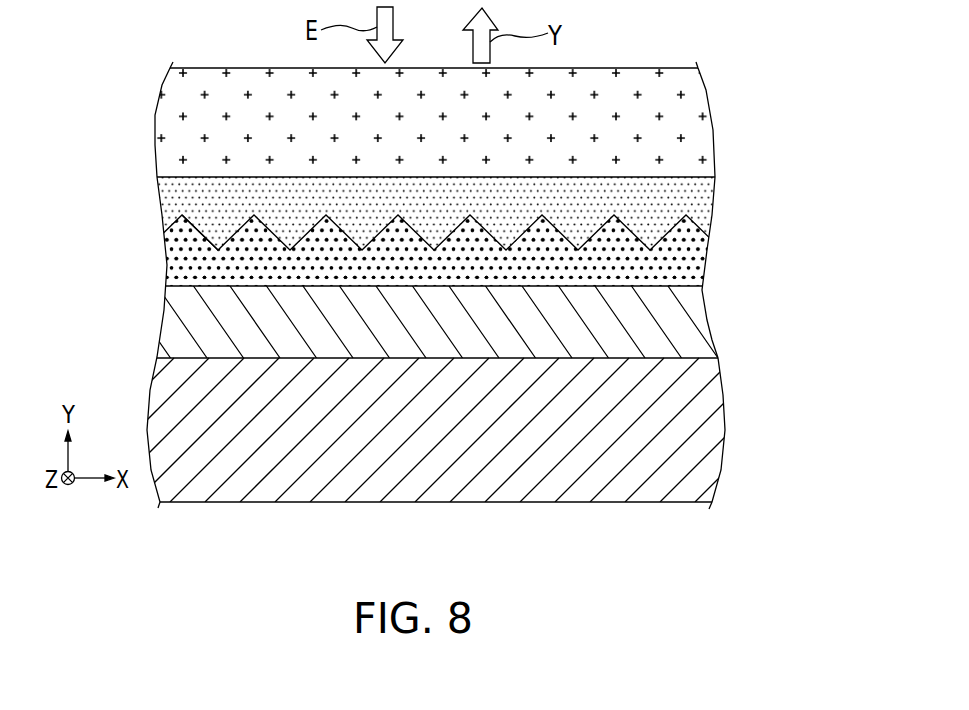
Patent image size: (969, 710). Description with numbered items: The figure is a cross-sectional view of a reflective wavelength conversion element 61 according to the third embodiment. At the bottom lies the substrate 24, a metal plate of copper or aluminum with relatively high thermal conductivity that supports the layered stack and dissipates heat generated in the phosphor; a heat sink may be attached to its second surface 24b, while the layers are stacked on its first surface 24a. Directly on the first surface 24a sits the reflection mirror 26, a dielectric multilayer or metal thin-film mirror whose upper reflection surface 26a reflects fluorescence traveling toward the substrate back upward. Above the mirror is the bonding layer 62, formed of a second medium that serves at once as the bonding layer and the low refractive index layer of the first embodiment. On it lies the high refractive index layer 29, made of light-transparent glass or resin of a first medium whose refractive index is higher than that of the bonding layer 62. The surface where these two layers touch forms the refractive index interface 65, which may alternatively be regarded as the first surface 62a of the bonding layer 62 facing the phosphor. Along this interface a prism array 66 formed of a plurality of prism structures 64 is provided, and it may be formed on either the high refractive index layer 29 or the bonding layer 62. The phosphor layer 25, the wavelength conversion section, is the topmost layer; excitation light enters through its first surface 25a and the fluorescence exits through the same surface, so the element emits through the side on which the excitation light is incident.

The wavelength conversion element 61 is at (184, 49).
The phosphor layer 25 is at (698, 114).
The first surface 25a is at (635, 68).
The high refractive index layer 29 is at (698, 188).
The bonding layer 62 is at (685, 272).
The first surface of the bonding layer 62a is at (622, 222).
The refractive index interface 65 is at (200, 238).
The prism structures 64 is at (386, 236).
The prism array 66 is at (435, 390).
The reflection mirror 26 is at (690, 311).
The reflection surface 26a is at (207, 287).
The substrate 24 is at (705, 430).
The first surface of the substrate 24a is at (176, 357).
The second surface of the substrate 24b is at (180, 505).